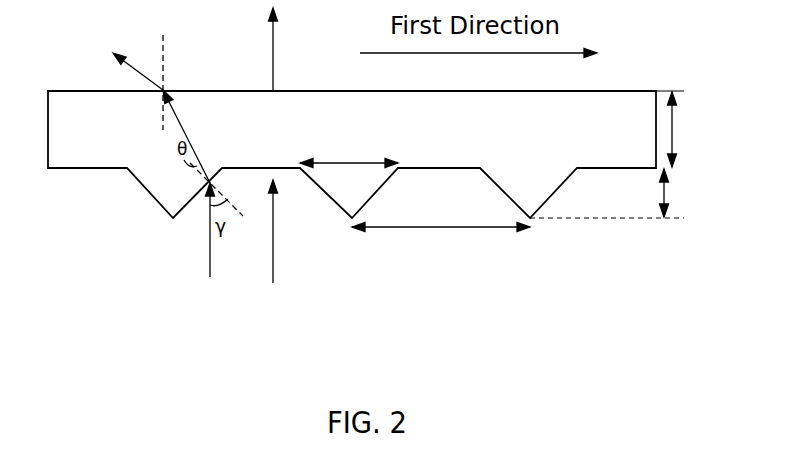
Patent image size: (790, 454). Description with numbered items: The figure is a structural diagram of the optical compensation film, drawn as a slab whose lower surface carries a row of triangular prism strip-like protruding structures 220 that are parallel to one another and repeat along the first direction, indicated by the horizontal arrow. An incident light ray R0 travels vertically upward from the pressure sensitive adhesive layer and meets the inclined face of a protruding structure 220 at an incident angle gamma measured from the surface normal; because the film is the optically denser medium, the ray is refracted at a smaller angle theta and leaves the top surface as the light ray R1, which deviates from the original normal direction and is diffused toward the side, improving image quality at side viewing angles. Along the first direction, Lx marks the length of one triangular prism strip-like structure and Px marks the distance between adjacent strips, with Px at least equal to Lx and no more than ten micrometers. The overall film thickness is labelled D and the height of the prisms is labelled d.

The protruding structure 220 is at (145, 187).
The light R0 is at (189, 193).
The light R1 is at (117, 61).
The thickness of light guide plate D is at (677, 129).
The depth of microstructure d is at (609, 193).
The length of the triangular prism strip-like structure Lx is at (349, 152).
The distance between the adjacent triangular prism strip-like structures Px is at (441, 240).